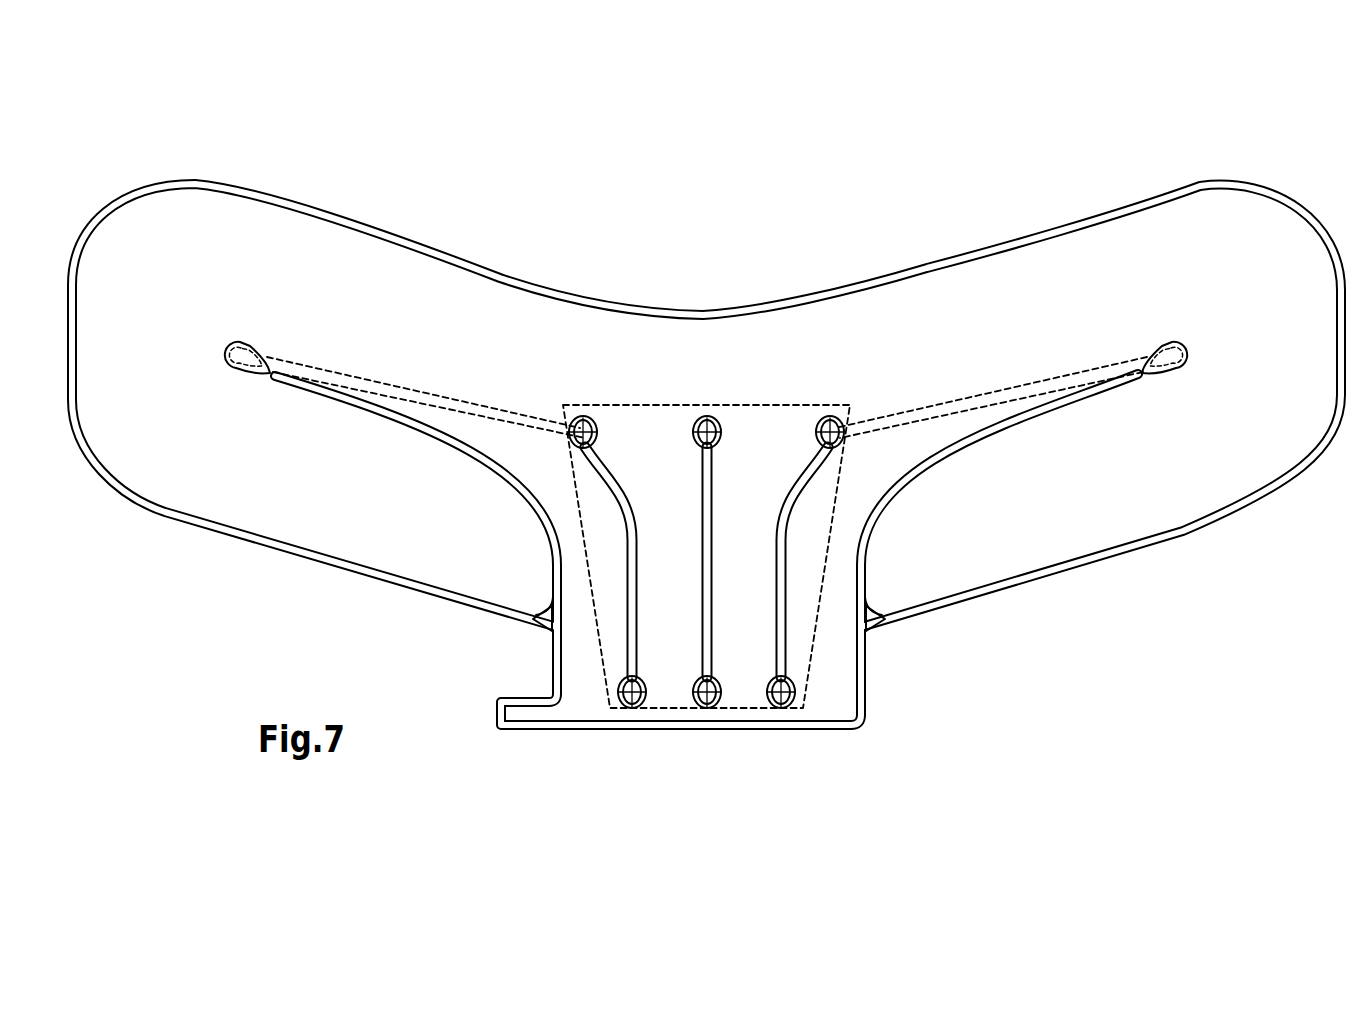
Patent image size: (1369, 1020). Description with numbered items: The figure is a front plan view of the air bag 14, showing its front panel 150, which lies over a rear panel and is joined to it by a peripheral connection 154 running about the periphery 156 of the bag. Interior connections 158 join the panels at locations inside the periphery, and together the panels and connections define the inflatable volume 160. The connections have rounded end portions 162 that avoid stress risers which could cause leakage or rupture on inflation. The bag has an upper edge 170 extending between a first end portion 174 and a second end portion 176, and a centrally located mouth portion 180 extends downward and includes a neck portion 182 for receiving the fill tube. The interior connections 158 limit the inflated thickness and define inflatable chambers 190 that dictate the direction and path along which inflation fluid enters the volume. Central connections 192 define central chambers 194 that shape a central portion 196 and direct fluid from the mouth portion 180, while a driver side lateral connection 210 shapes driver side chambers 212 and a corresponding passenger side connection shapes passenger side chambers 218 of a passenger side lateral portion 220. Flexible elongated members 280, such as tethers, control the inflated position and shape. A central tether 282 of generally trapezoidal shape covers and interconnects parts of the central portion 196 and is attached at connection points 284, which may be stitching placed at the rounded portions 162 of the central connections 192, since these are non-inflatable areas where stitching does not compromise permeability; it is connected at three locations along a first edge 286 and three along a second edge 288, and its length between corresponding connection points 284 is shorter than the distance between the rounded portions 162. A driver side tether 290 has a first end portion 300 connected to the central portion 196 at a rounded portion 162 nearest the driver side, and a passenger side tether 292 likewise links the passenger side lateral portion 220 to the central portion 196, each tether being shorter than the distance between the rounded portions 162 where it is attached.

The air bag 14 is at (704, 406).
The front panel 150 is at (420, 313).
The peripheral connection 154 is at (547, 280).
The periphery 156 is at (632, 305).
The interior connections 158 is at (293, 390).
The inflatable volume 160 is at (933, 320).
The end portions 162 is at (238, 344).
The upper edge 170 is at (807, 307).
The first end portion 174 is at (153, 243).
The second end portion 176 is at (1245, 247).
The mouth portion 180 is at (587, 693).
The neck portion 182 is at (538, 713).
The inflatable chambers 190 is at (338, 465).
The central connections 192 is at (771, 359).
The central chambers 194 is at (747, 638).
The central portion 196 is at (760, 613).
The driver side lateral connection 210 is at (697, 451).
The driver side chambers 212 is at (1166, 161).
The passenger side chambers 218 is at (428, 169).
The passenger side lateral portion 220 is at (283, 283).
The flexible elongated members 280 is at (427, 393).
The central tether 282 is at (981, 549).
The connection points 284 is at (693, 440).
The first edge 286 is at (832, 405).
The second edge 288 is at (787, 707).
The driver side tether 290 is at (1046, 314).
The passenger side tether 292 is at (538, 336).
The first end portion 300 is at (857, 430).